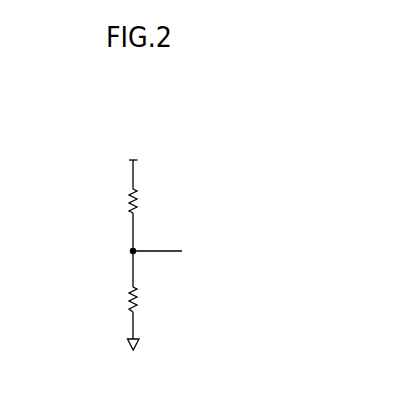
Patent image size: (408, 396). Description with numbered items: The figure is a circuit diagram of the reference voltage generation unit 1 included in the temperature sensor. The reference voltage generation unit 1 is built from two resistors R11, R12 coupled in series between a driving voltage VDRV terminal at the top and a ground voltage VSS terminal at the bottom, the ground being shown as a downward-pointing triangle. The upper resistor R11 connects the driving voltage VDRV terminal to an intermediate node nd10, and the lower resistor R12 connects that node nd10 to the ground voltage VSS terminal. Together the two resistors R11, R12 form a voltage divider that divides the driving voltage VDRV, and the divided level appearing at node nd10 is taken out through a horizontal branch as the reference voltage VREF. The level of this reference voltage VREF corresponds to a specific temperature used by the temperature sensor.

The reference voltage generation unit 1 is at (272, 106).
The resistor R11 is at (114, 202).
The resistor R12 is at (114, 299).
The node nd10 is at (111, 251).
The driving voltage VDRV is at (134, 151).
The reference voltage VREF is at (181, 251).
The ground voltage VSS is at (132, 356).